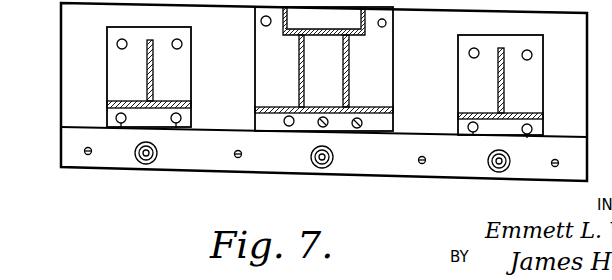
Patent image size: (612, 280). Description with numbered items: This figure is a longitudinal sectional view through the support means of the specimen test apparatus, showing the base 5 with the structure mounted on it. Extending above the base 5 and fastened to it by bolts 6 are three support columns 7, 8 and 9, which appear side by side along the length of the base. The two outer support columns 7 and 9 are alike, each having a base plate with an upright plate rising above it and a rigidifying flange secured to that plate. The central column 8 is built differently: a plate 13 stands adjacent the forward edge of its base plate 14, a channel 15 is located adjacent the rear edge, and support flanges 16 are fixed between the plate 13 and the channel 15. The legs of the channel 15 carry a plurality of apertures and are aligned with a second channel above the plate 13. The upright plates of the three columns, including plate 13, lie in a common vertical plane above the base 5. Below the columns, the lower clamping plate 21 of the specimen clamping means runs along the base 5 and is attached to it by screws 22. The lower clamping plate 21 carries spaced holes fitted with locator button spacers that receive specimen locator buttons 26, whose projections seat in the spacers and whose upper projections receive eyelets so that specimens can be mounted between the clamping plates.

The base 5 is at (80, 45).
The bolts 6 is at (175, 41).
The support column 7 is at (121, 77).
The central column 8 is at (325, 69).
The support column 9 is at (535, 80).
The plate 13 is at (368, 108).
The base plate 14 is at (370, 62).
The channel 15 is at (292, 33).
The support flanges 16 is at (345, 66).
The lower clamping plate 21 is at (76, 141).
The screws 22 is at (88, 156).
The specimen locator buttons 26 is at (148, 159).